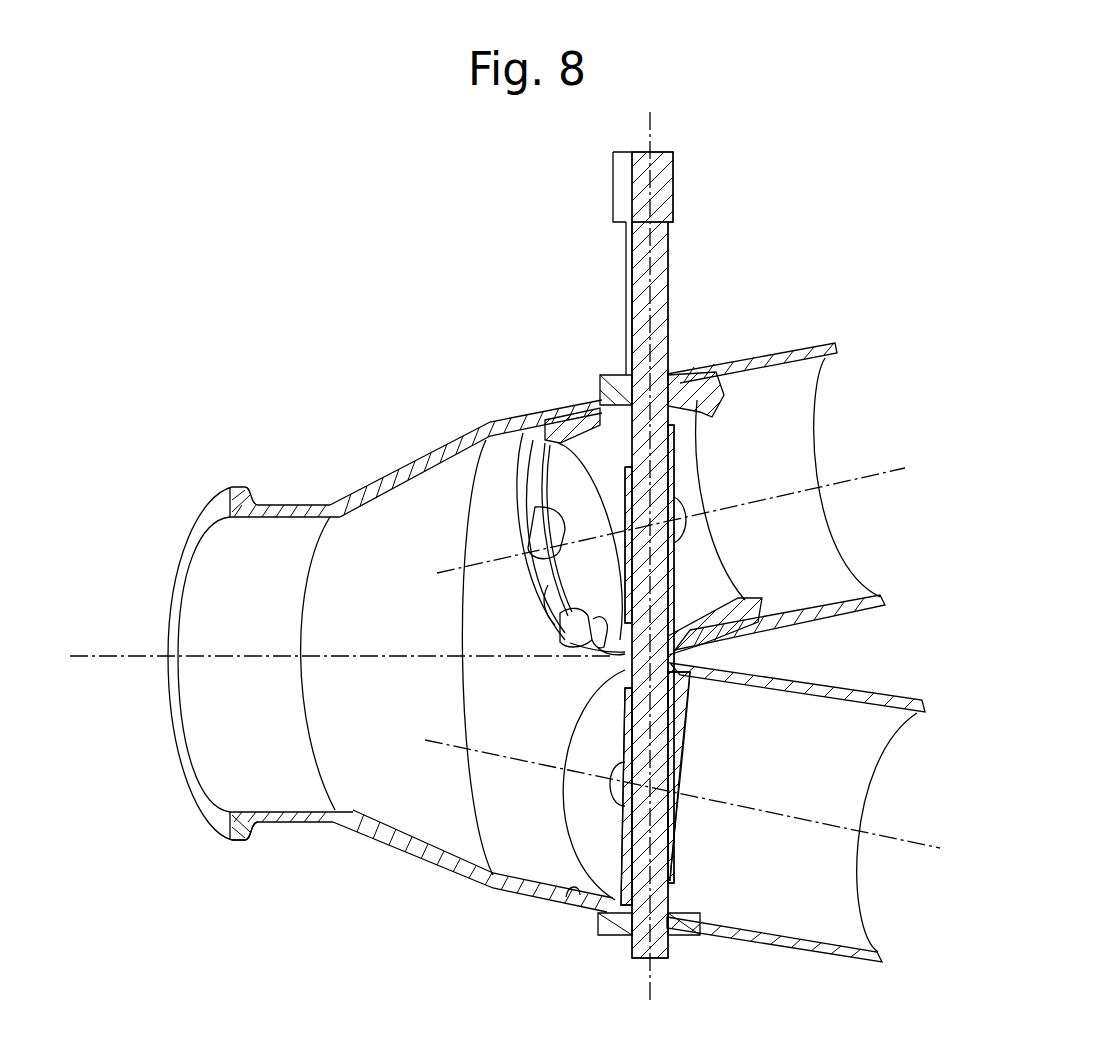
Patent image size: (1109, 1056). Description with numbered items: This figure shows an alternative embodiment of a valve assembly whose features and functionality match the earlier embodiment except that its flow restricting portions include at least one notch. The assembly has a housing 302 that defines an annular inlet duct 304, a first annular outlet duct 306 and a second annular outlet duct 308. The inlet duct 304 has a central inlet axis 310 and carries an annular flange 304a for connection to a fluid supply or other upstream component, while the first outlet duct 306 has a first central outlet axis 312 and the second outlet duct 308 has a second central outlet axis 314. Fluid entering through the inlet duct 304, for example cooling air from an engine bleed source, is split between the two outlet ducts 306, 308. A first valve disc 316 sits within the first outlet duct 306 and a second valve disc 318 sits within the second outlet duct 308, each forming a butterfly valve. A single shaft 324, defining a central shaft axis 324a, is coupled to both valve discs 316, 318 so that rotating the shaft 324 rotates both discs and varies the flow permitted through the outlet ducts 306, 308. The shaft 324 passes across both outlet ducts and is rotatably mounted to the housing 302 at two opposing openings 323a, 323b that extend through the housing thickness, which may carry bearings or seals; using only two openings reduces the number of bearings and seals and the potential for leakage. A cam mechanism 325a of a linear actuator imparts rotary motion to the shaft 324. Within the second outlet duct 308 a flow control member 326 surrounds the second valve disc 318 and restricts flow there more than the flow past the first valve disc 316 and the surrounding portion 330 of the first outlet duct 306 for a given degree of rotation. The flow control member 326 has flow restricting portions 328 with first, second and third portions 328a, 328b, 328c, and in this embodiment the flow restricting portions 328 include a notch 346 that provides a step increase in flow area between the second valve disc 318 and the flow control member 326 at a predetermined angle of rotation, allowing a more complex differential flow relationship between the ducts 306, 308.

The housing 302 is at (378, 490).
The annular inlet duct 304 is at (212, 740).
The annular flange 304a is at (243, 845).
The first annular outlet duct 306 is at (850, 768).
The second annular outlet duct 308 is at (792, 408).
The central inlet axis 310 is at (95, 652).
The first central outlet axis 312 is at (898, 847).
The second central outlet axis 314 is at (905, 468).
The first valve disc 316 is at (583, 843).
The second valve disc 318 is at (597, 462).
The opening 323a is at (635, 937).
The opening 323b is at (668, 372).
The shaft 324 is at (656, 238).
The central shaft axis 324a is at (653, 137).
The cam mechanism 325a is at (620, 175).
The flow control member 326 is at (690, 375).
The flow restricting portion 328 is at (552, 410).
The first portion 328a is at (618, 645).
The second portion 328b is at (527, 612).
The third portion 328c is at (513, 588).
The portion of the first outlet duct 330 is at (572, 887).
The notch 346 is at (478, 528).